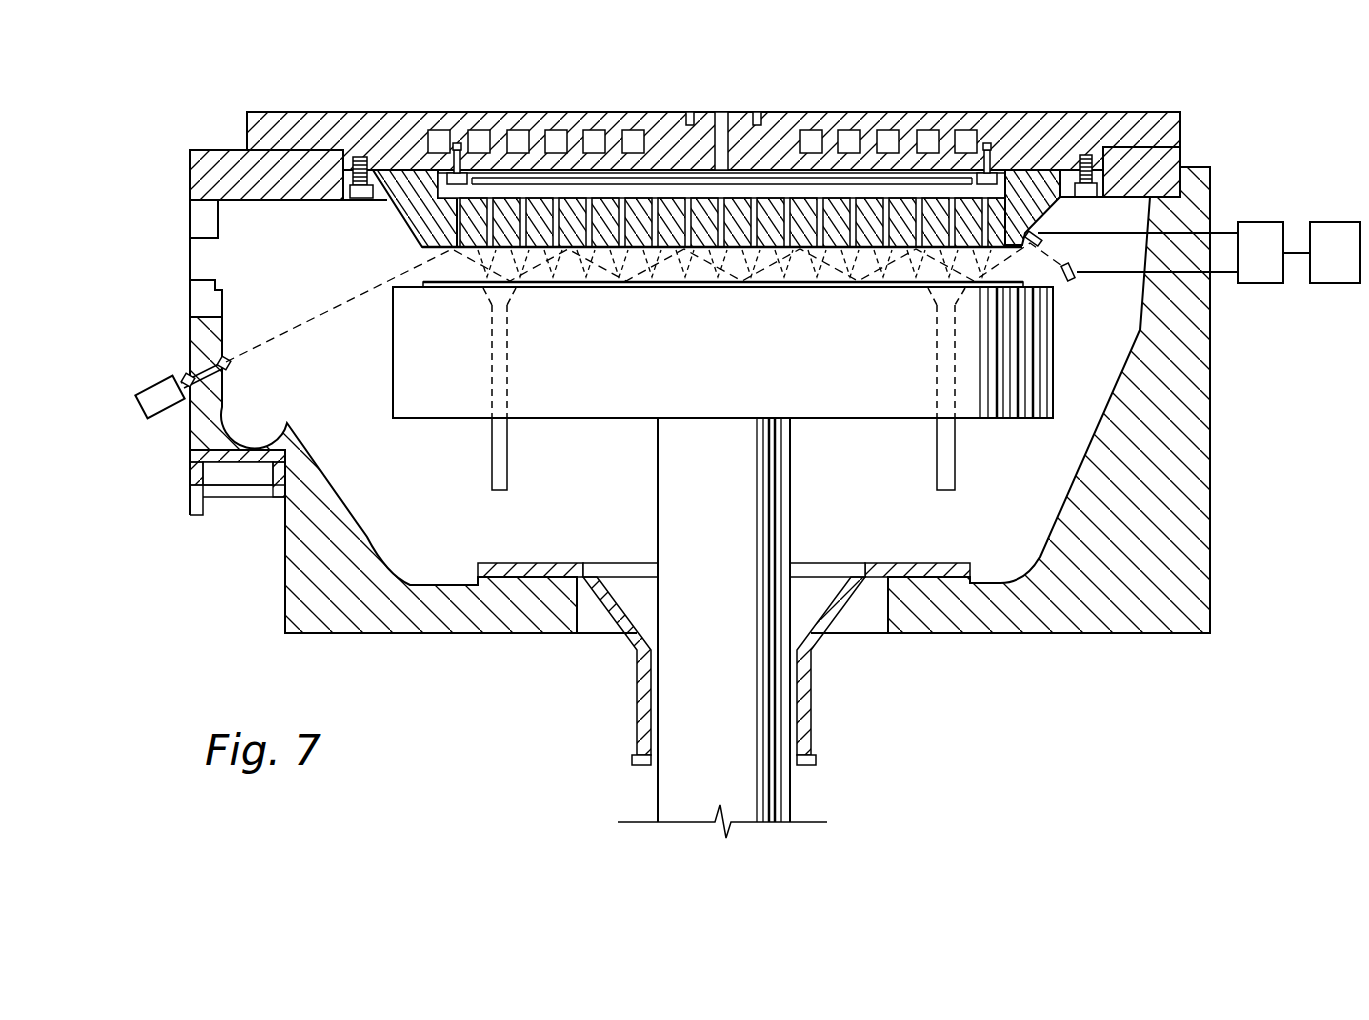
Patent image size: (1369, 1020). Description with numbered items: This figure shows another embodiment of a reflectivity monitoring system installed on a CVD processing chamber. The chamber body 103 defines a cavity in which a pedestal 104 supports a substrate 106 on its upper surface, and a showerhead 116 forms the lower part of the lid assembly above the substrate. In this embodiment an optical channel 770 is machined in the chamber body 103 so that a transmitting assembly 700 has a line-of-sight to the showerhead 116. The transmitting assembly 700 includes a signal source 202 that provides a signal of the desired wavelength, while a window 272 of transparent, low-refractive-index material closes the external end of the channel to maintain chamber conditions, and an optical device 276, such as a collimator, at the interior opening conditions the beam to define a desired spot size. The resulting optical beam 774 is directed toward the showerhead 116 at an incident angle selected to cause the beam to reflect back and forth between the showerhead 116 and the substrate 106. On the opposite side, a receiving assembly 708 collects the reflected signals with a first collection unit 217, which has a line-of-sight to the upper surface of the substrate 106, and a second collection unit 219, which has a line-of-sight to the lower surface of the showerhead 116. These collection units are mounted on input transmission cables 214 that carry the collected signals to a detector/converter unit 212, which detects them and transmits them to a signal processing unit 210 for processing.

The chamber body 103 is at (1132, 633).
The pedestal 104 is at (593, 422).
The substrate 106 is at (733, 288).
The showerhead 116 is at (393, 213).
The signal source 202 is at (153, 393).
The signal processing unit 210 is at (1333, 222).
The detector/converter unit 212 is at (1257, 222).
The input transmission cables 214 is at (1123, 232).
The first collection unit 217 is at (1045, 243).
The second collection unit 219 is at (1065, 282).
The window 272 is at (187, 377).
The optical device 276 is at (232, 363).
The transmitting assembly 700 is at (139, 444).
The receiving assembly 708 is at (1290, 306).
The optical channel 770 is at (228, 380).
The optical beam 774 is at (345, 298).